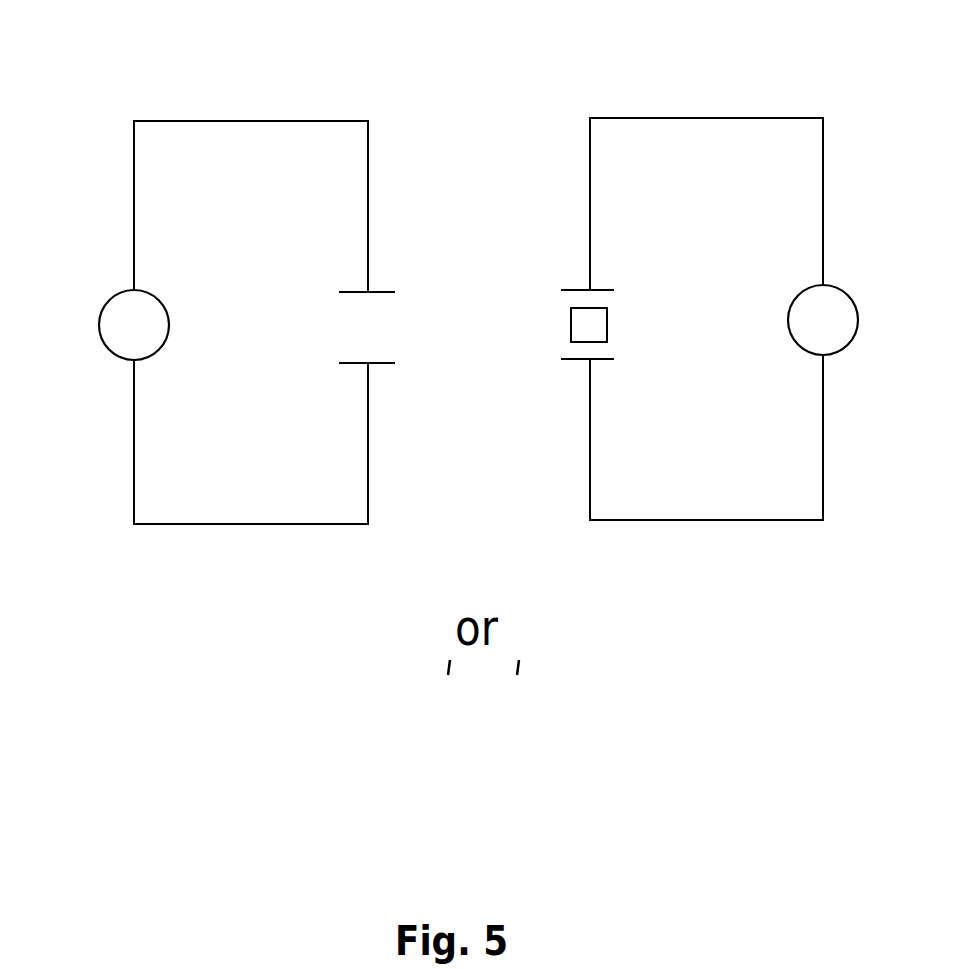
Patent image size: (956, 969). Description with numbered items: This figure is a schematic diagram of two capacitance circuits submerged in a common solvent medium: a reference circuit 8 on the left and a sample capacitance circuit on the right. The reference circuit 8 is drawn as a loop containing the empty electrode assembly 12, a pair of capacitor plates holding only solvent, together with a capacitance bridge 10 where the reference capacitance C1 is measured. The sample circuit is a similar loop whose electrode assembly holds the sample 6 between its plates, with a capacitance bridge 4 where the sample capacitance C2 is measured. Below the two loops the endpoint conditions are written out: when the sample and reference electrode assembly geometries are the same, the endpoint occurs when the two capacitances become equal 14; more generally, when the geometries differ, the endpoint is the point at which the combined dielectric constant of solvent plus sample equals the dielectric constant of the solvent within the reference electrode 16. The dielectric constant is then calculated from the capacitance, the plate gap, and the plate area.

The reference circuit 8 is at (264, 119).
The empty electrode assembly 12 is at (404, 362).
The capacitance bridge 10 is at (101, 306).
The capacitance bridge 4 is at (852, 294).
The sample 6 is at (588, 324).
The endpoint condition for equal geometries 14 is at (551, 575).
The endpoint condition for differing geometries 16 is at (551, 688).